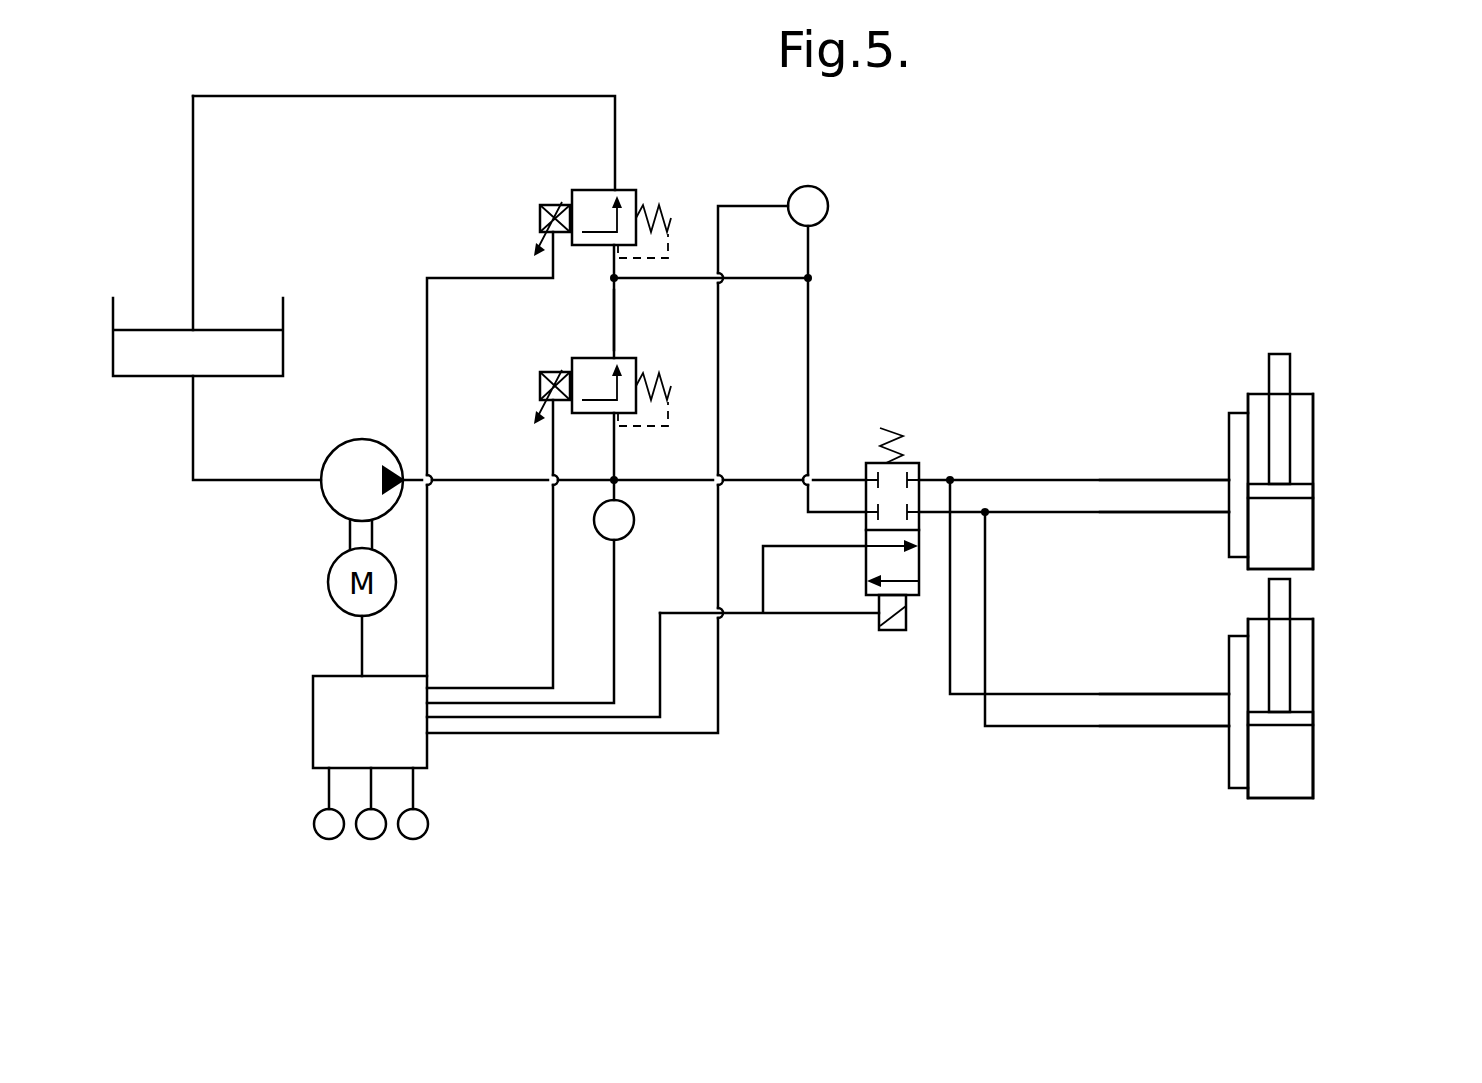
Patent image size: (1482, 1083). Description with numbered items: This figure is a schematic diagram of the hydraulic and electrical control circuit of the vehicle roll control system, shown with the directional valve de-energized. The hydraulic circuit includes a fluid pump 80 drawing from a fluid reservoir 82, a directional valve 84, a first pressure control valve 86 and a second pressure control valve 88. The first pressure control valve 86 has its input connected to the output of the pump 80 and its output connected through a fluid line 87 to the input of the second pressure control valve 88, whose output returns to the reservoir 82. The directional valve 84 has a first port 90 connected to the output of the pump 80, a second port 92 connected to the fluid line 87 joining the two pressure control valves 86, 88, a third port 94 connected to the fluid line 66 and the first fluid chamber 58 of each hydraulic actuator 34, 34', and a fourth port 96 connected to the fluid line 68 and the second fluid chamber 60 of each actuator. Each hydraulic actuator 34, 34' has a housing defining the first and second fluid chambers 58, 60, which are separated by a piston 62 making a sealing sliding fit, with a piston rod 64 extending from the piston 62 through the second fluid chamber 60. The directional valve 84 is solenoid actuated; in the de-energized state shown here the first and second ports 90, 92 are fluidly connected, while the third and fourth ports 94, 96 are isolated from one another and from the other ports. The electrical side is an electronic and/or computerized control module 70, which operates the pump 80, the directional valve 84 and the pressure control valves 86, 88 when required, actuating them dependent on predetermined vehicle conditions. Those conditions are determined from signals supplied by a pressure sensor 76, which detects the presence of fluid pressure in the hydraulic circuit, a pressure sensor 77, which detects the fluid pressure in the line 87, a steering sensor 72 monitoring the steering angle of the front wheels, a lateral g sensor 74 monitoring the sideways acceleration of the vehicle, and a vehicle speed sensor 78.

The hydraulic actuator 34 is at (1345, 481).
The hydraulic actuator 34' is at (1348, 708).
The first fluid chamber 58 is at (1306, 550).
The second fluid chamber 60 is at (1306, 432).
The piston 62 is at (1306, 490).
The piston rod 64 is at (1285, 370).
The fluid line 66 is at (1187, 514).
The fluid line 68 is at (1190, 477).
The control module 70 is at (323, 721).
The steering sensor 72 is at (320, 826).
The lateral g sensor 74 is at (367, 834).
The pressure sensor 76 is at (636, 521).
The pressure sensor 77 is at (808, 186).
The vehicle speed sensor 78 is at (410, 835).
The fluid pump 80 is at (333, 512).
The fluid reservoir 82 is at (150, 355).
The directional valve 84 is at (932, 452).
The first pressure control valve 86 is at (632, 358).
The fluid line 87 is at (613, 319).
The second pressure control valve 88 is at (632, 190).
The first port 90 is at (862, 478).
The second port 92 is at (865, 514).
The third port 94 is at (921, 513).
The fourth port 96 is at (922, 477).